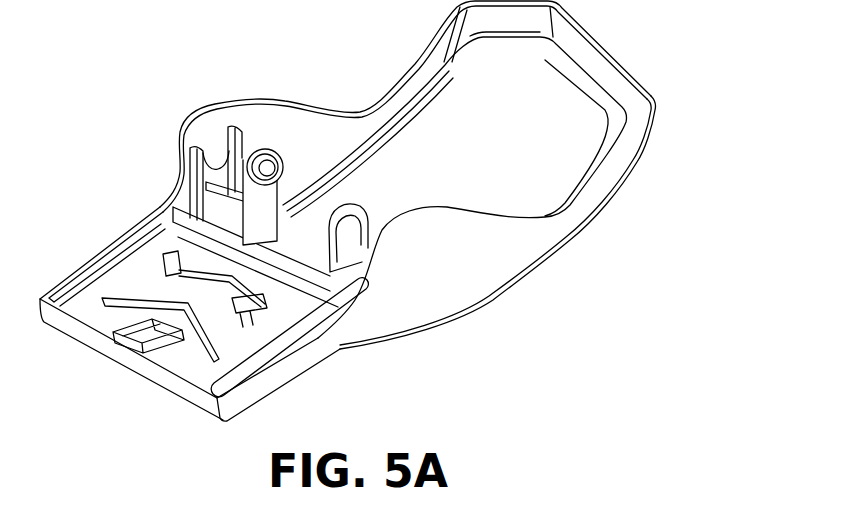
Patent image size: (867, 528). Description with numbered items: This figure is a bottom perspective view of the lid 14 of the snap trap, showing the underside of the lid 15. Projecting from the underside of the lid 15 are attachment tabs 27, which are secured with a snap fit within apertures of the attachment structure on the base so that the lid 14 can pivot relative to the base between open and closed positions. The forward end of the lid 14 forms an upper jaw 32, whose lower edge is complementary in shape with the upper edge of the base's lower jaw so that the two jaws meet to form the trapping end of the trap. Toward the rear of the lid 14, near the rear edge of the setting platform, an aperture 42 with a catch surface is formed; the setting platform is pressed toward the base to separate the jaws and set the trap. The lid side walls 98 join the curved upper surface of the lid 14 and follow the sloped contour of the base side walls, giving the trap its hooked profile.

The lid 14 is at (140, 148).
The underside of the lid 15 is at (440, 133).
The attachment tabs 27 is at (279, 167).
The upper jaw 32 is at (628, 62).
The aperture 42 is at (155, 337).
The lid side walls 98 is at (467, 277).